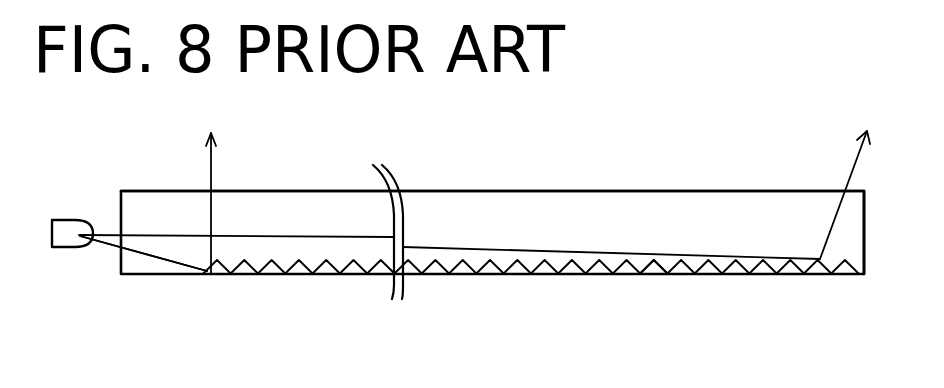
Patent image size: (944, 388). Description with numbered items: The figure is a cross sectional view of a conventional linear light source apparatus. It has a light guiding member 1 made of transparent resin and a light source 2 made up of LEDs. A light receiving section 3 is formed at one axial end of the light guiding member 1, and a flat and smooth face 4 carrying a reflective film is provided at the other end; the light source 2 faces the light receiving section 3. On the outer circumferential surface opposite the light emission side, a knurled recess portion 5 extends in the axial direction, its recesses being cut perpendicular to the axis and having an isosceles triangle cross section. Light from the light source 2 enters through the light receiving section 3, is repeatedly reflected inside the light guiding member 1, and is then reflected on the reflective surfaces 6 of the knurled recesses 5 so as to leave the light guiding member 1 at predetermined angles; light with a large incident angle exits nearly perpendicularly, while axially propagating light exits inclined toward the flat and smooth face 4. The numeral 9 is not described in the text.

The light guiding member 1 is at (588, 117).
The light source 2 is at (65, 248).
The light receiving section 3 is at (121, 200).
The flat and smooth face 4 is at (865, 262).
The knurled recess portion 5 is at (860, 278).
The reflective surface 6 is at (661, 272).
The light emitting surface 9 is at (643, 190).